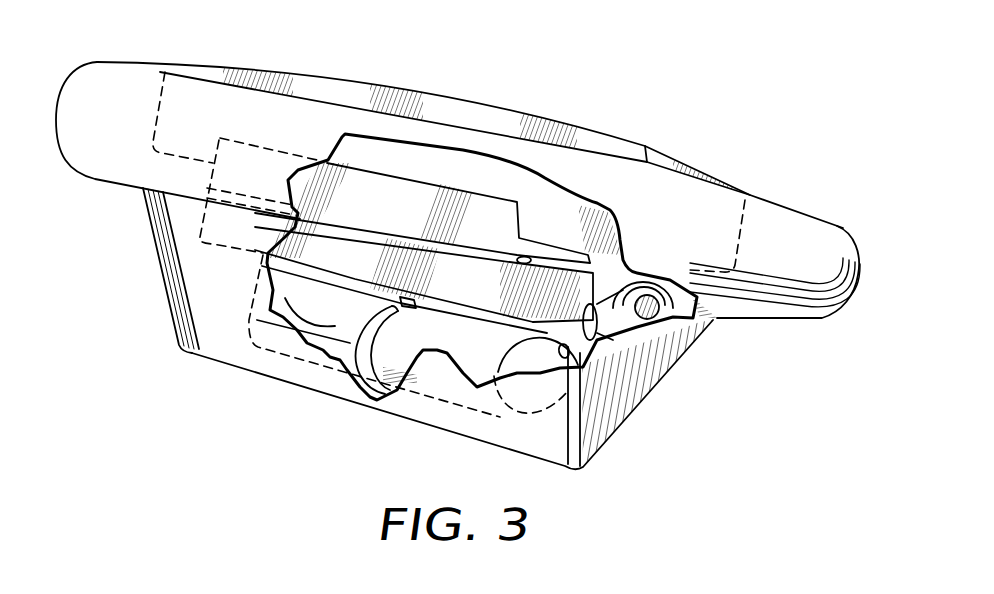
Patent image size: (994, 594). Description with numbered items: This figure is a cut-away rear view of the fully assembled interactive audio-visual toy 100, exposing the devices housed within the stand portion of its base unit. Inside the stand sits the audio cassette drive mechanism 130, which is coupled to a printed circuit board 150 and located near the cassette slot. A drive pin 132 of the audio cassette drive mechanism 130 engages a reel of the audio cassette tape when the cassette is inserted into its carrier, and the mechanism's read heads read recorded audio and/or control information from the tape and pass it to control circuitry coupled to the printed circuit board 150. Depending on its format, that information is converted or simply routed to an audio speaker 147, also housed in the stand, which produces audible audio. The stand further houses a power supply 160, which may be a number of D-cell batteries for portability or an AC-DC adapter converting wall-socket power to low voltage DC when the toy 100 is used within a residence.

The interactive audio-visual toy 100 is at (772, 196).
The drive pin 132 is at (300, 233).
The audio cassette drive mechanism 130 is at (327, 247).
The printed circuit board 150 is at (200, 349).
The power supply 160 is at (443, 353).
The audio speaker 147 is at (693, 318).